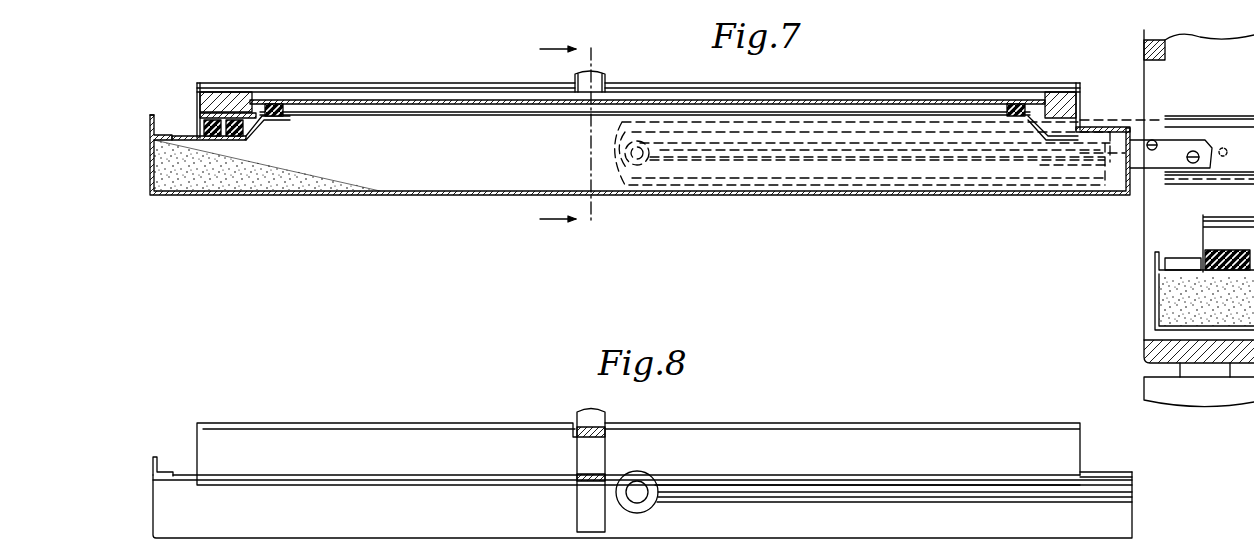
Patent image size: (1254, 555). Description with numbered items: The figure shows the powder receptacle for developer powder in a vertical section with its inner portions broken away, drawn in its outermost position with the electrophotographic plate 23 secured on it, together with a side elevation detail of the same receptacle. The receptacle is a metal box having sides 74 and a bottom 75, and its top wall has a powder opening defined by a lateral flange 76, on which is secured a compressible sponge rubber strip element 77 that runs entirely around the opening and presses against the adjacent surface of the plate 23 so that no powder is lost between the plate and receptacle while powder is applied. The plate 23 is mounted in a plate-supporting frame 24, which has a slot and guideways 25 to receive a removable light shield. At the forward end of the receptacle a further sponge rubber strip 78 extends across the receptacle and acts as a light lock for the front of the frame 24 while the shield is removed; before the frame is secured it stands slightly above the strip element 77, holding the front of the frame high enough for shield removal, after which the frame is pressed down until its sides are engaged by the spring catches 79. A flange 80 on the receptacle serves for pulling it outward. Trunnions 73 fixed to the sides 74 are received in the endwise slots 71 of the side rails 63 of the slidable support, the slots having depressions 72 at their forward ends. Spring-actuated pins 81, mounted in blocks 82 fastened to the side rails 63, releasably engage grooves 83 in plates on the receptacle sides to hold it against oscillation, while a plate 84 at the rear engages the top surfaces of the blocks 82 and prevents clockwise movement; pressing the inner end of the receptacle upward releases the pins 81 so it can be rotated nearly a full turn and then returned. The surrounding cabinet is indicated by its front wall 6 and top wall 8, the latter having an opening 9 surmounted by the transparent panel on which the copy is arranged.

In FIG. 7, the front wall 6 is at (1226, 120).
In FIG. 7, the top wall 8 is at (1155, 256).
In FIG. 7, the opening 9 is at (566, 134).
In FIG. 7, the electrophotographic plate 23 is at (456, 105).
In FIG. 7, the plate-supporting frame 24 is at (228, 96).
In FIG. 8, the plate-supporting frame 24 is at (608, 437).
In FIG. 7, the slot and guideways 25 is at (198, 103).
In FIG. 7, the side rails 63 is at (868, 186).
In FIG. 7, the slots 71 is at (1058, 166).
In FIG. 7, the depressions 72 is at (650, 170).
In FIG. 7, the trunnions 73 is at (633, 166).
In FIG. 8, the trunnions 73 is at (642, 490).
In FIG. 8, the sides 74 is at (337, 520).
In FIG. 7, the bottom 75 is at (354, 196).
In FIG. 7, the lateral flange 76 is at (283, 110).
In FIG. 7, the sponge rubber strip element 77 is at (288, 112).
In FIG. 7, the sponge rubber strip 78 is at (256, 134).
In FIG. 7, the spring catches 79 is at (598, 74).
In FIG. 8, the spring catches 79 is at (597, 421).
In FIG. 7, the flange 80 is at (155, 126).
In FIG. 8, the flange 80 is at (156, 458).
In FIG. 7, the spring-actuated pins 81 is at (1114, 182).
In FIG. 7, the blocks 82 is at (1185, 146).
In FIG. 8, the grooves 83 is at (852, 506).
In FIG. 7, the plate 84 is at (1113, 127).
In FIG. 8, the plate 84 is at (1106, 473).